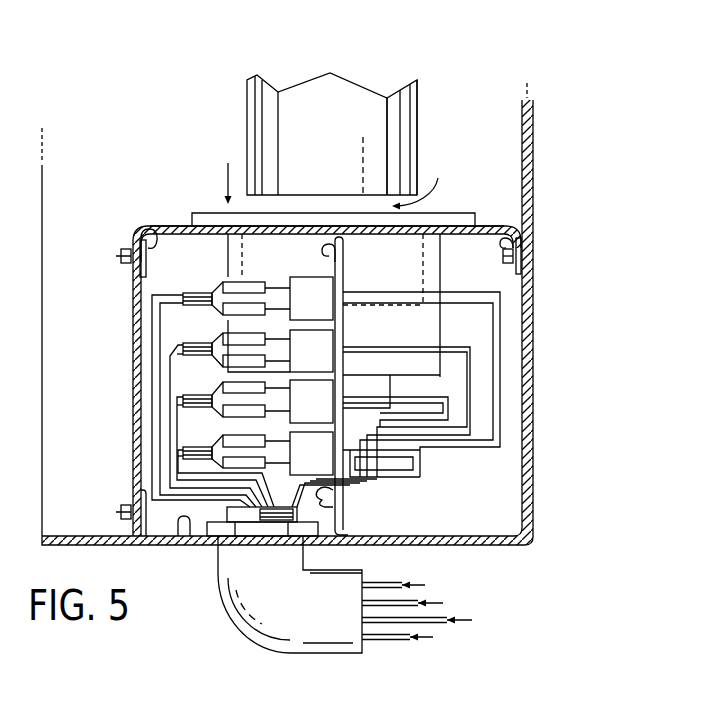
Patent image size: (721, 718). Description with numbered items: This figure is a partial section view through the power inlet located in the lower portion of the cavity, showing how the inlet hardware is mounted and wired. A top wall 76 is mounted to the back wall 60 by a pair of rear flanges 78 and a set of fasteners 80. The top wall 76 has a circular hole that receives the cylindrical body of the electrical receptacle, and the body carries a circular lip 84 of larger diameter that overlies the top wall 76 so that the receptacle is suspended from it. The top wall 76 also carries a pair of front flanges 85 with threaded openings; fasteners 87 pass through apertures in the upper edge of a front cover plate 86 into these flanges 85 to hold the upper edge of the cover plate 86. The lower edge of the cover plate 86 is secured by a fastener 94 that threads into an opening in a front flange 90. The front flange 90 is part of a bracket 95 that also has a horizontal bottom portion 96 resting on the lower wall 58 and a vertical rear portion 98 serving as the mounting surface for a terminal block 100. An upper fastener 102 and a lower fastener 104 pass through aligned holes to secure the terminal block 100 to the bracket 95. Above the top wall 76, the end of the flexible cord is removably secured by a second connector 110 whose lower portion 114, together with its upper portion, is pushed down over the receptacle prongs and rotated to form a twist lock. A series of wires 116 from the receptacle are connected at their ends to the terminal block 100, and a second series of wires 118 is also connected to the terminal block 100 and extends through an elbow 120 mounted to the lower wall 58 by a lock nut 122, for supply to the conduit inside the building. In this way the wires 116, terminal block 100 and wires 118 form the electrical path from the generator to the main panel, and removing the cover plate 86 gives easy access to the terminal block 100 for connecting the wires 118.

The lower wall 58 is at (530, 543).
The back wall 60 is at (533, 150).
The top wall 76 is at (181, 226).
The rear flanges 78 is at (525, 250).
The fasteners 80 is at (504, 255).
The circular lip 84 is at (456, 212).
The front flanges 85 is at (140, 236).
The front cover plate 86 is at (133, 386).
The fasteners 87 is at (120, 253).
The front flange 90 is at (156, 527).
The fastener 94 is at (122, 512).
The bracket 95 is at (362, 524).
The bottom portion 96 is at (186, 520).
The vertical rear portion 98 is at (345, 261).
The terminal block 100 is at (300, 268).
The upper fastener 102 is at (325, 250).
The lower fastener 104 is at (340, 506).
The second connector 110 is at (400, 60).
The lower portion 114 is at (400, 127).
The wires 116 is at (473, 310).
The wires 118 is at (180, 338).
The elbow 120 is at (258, 622).
The lock nut 122 is at (322, 544).